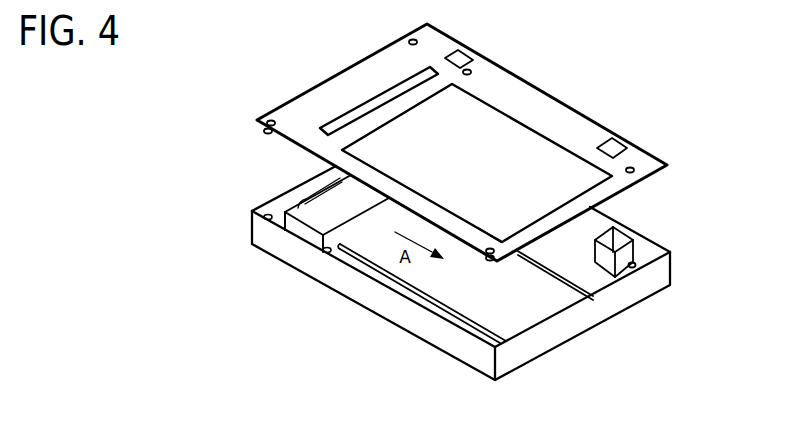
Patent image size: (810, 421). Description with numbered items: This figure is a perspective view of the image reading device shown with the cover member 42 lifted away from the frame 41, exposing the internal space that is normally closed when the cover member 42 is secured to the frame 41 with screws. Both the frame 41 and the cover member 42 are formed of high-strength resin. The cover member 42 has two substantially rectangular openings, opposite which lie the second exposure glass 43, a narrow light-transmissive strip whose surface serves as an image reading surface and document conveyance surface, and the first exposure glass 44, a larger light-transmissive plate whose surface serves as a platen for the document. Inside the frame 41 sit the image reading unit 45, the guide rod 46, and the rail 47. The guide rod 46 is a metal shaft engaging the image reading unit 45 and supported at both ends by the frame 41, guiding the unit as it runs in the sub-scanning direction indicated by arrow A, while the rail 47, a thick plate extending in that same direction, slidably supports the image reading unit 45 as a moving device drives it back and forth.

The frame 41 is at (246, 222).
The cover member 42 is at (596, 106).
The second exposure glass 43 is at (372, 107).
The first exposure glass 44 is at (492, 117).
The image reading unit 45 is at (308, 220).
The guide rod 46 is at (412, 290).
The rail 47 is at (560, 271).